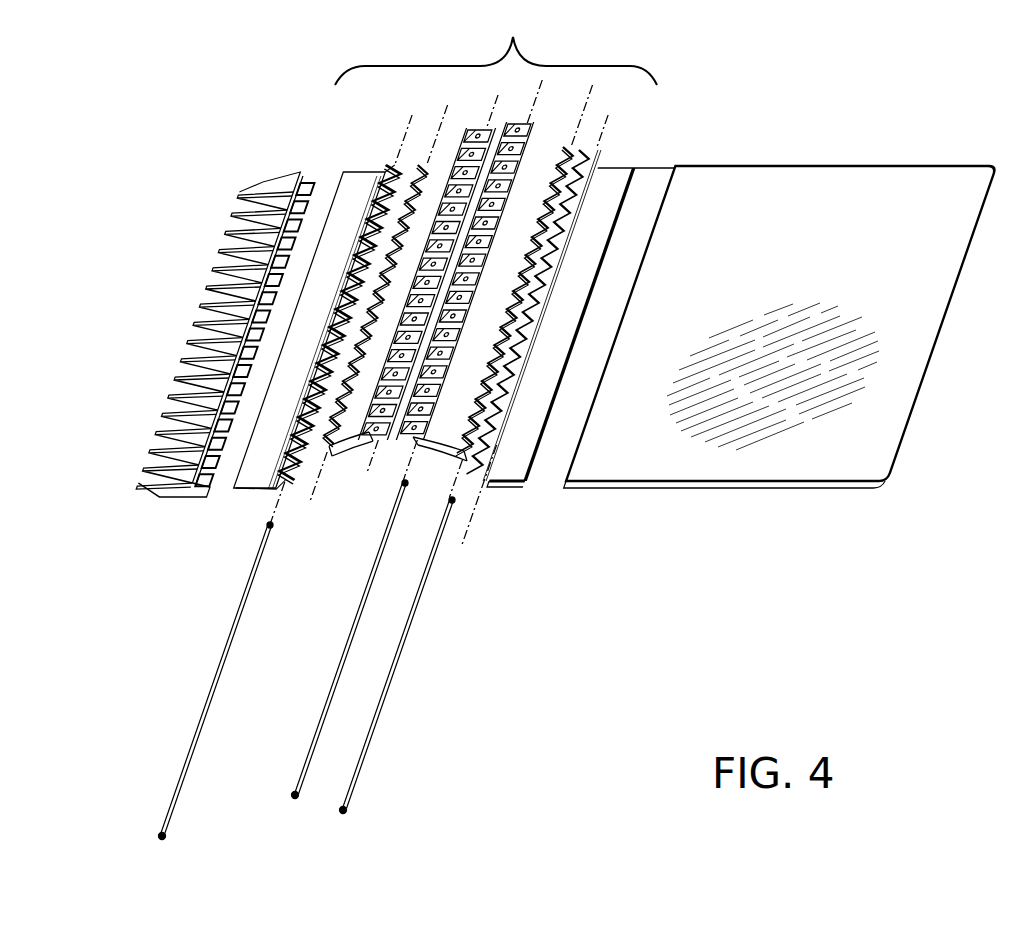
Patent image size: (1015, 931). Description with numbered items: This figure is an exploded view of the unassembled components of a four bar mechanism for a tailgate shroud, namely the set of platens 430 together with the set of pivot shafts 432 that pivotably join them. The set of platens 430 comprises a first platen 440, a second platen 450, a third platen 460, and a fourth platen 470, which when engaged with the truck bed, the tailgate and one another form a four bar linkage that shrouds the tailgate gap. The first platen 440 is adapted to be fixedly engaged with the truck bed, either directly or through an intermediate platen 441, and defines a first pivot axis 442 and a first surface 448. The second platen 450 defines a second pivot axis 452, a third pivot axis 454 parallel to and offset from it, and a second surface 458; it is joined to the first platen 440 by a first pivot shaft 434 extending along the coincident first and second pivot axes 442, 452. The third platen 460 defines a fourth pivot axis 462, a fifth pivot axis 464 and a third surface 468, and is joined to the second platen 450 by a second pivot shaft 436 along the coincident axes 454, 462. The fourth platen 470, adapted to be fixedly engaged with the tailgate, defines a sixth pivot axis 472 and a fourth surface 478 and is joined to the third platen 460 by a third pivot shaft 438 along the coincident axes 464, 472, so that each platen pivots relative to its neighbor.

The set of platens 430 is at (496, 47).
The set of pivot shafts 432 is at (311, 660).
The first pivot shaft 434 is at (192, 748).
The second pivot shaft 436 is at (294, 794).
The third pivot shaft 438 is at (388, 702).
The first platen 440 is at (285, 477).
The intermediate platen 441 is at (222, 313).
The first pivot axis 442 is at (275, 512).
The first surface 448 is at (357, 192).
The second platen 450 is at (351, 452).
The second pivot axis 452 is at (322, 470).
The third pivot axis 454 is at (490, 129).
The second surface 458 is at (439, 172).
The third platen 460 is at (453, 423).
The fourth pivot axis 462 is at (395, 497).
The fifth pivot axis 464 is at (461, 470).
The third surface 468 is at (550, 167).
The fourth platen 470 is at (613, 192).
The sixth pivot axis 472 is at (473, 515).
The fourth surface 478 is at (595, 246).